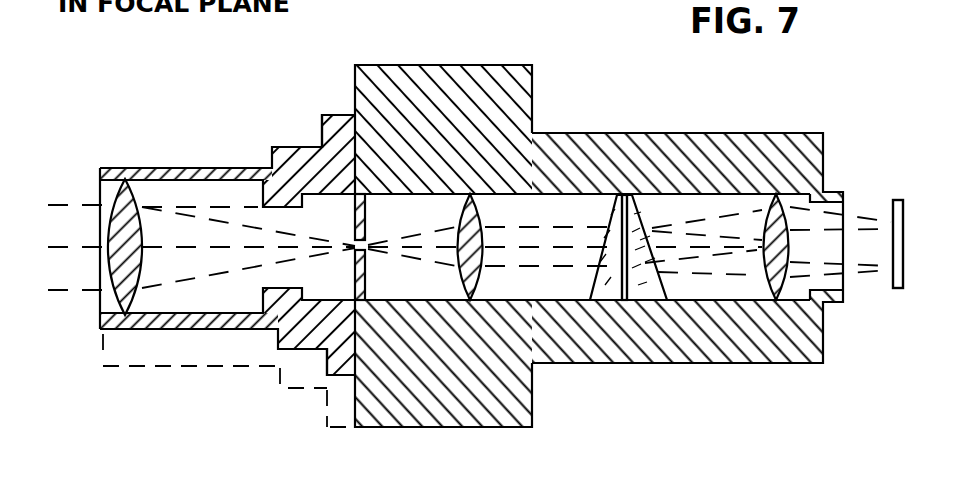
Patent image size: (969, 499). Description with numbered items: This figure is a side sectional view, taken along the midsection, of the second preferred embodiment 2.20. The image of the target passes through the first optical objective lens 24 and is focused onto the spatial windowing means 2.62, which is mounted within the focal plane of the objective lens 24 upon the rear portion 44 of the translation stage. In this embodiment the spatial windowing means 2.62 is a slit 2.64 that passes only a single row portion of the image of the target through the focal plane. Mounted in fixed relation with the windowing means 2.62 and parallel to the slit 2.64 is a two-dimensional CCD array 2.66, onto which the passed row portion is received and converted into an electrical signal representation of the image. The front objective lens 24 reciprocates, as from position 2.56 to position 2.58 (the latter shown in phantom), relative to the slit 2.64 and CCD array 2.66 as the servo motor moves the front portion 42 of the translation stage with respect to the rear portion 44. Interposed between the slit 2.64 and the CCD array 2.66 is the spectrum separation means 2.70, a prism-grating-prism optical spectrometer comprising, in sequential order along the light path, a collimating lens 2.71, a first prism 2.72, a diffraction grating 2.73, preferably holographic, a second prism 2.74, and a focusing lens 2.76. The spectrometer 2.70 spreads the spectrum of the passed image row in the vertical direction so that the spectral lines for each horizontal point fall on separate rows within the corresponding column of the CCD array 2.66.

The first optical objective lens 24 is at (118, 294).
The position 2.56 is at (160, 168).
The front portion of the translation stage 42 is at (342, 115).
The rear portion of the translation stage 44 is at (372, 65).
The second preferred embodiment 2.20 is at (630, 103).
The spatial windowing means 2.62 is at (355, 220).
The slit 2.64 is at (375, 258).
The spectrum separation means 2.70 is at (447, 213).
The collimating lens 2.71 is at (483, 207).
The first prism 2.72 is at (601, 283).
The diffraction grating 2.73 is at (618, 204).
The second prism 2.74 is at (633, 204).
The focusing lens 2.76 is at (765, 282).
The CCD array 2.66 is at (893, 283).
The position 2.58 is at (292, 393).